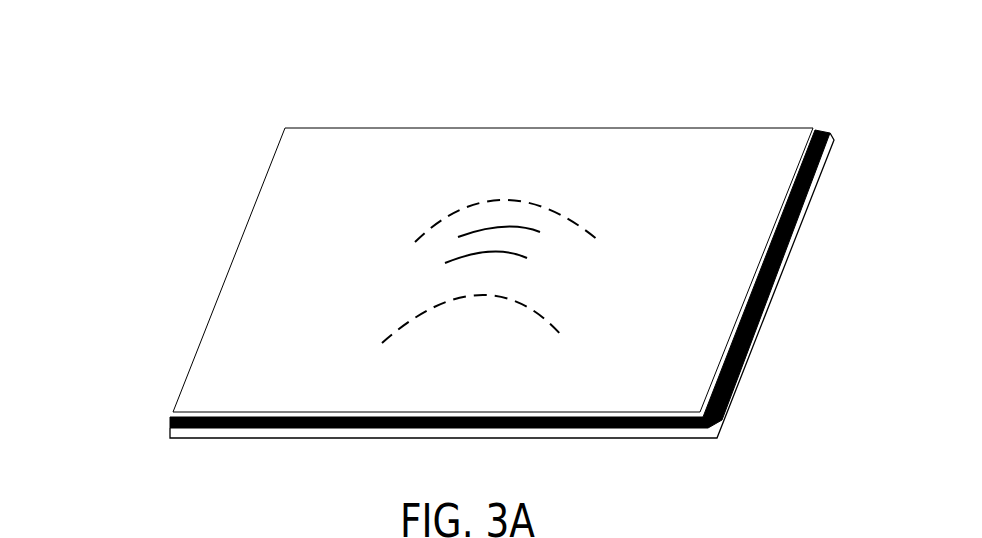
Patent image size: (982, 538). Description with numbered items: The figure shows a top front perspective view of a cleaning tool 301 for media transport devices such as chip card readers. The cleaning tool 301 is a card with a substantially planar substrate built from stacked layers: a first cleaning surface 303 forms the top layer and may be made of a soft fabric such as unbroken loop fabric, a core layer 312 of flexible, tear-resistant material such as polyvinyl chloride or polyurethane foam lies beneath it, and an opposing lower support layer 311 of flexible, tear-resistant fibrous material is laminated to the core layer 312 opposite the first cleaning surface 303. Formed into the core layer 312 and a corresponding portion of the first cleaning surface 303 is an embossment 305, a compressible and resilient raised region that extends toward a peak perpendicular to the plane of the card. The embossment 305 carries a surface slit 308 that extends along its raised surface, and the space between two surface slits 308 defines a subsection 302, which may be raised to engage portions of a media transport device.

The cleaning tool 301 is at (262, 62).
The subsection 302 is at (508, 238).
The first cleaning surface 303 is at (278, 278).
The embossment 305 is at (448, 230).
The surface slit 308 is at (478, 230).
The support layer 311 is at (260, 432).
The core layer 312 is at (195, 418).